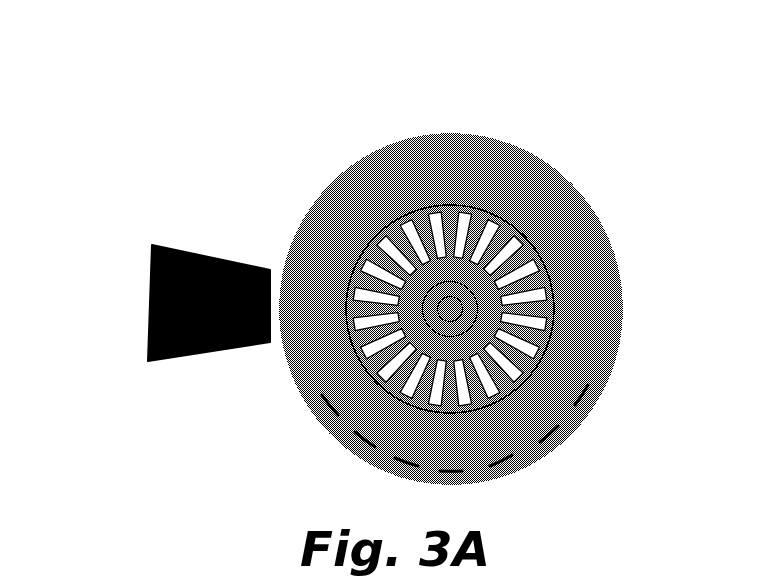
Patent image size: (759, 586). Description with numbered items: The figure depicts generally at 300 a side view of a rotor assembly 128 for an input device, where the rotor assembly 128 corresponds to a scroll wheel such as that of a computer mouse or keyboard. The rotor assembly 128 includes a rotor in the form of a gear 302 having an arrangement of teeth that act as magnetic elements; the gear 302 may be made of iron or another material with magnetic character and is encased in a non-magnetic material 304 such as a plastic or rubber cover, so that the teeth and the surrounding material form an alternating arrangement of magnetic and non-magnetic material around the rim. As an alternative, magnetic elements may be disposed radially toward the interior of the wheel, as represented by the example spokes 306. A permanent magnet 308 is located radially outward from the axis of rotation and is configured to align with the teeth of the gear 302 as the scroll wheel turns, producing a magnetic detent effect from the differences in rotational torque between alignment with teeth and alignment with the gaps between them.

The side view of rotor assembly 300 is at (128, 72).
The rotor assembly 128 is at (573, 82).
The gear 302 is at (542, 225).
The non-magnetic material 304 is at (385, 163).
The spokes 306 is at (543, 318).
The permanent magnet 308 is at (165, 232).